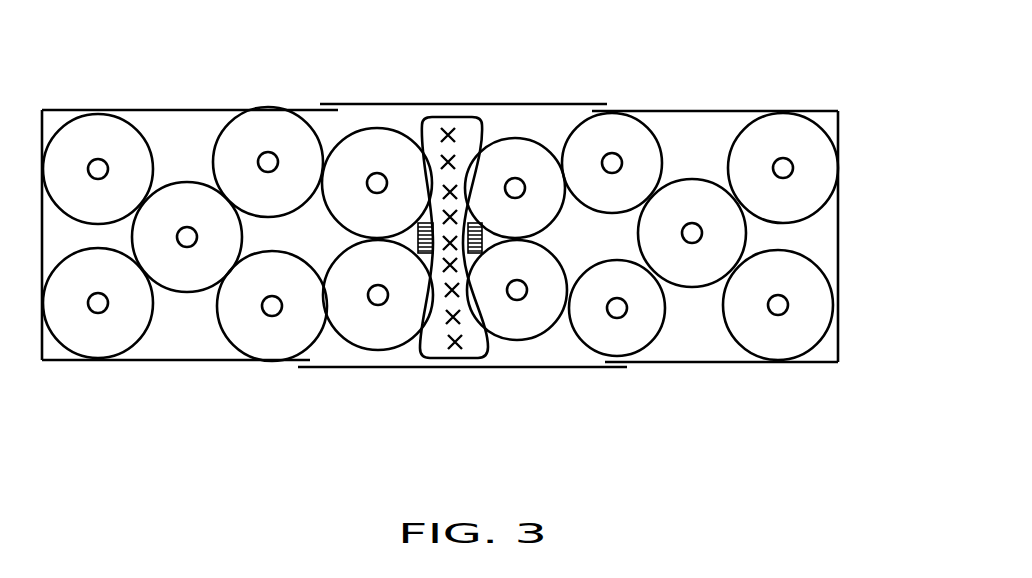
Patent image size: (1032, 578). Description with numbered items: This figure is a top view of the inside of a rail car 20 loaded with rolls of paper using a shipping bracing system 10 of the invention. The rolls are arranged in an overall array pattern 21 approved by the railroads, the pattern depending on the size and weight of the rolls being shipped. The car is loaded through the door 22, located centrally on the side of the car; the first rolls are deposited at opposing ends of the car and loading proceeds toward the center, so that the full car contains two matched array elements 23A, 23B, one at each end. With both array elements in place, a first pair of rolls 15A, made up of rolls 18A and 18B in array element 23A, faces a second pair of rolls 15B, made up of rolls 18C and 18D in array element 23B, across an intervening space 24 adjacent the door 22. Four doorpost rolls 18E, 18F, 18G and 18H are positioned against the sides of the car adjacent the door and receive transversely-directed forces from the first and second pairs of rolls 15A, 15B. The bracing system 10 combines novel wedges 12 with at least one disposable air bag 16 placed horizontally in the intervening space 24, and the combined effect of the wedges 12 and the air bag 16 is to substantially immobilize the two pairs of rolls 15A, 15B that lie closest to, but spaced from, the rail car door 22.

The bracing system 10 is at (554, 235).
The wedge 12 is at (497, 243).
The first pair of rolls 15A is at (380, 128).
The second pair of rolls 15B is at (559, 224).
The disposable air bag 16 is at (554, 235).
The roll 18A is at (393, 122).
The roll 18B is at (387, 353).
The roll 18C is at (553, 215).
The roll 18D is at (545, 340).
The doorpost roll 18E is at (230, 135).
The doorpost roll 18F is at (238, 349).
The doorpost roll 18G is at (658, 338).
The doorpost roll 18H is at (658, 152).
The rail car 20 is at (843, 215).
The overall array pattern 21 is at (802, 332).
The rail car door 22 is at (345, 103).
The array element 23A is at (186, 296).
The array element 23B is at (718, 314).
The intervening space 24 is at (460, 297).